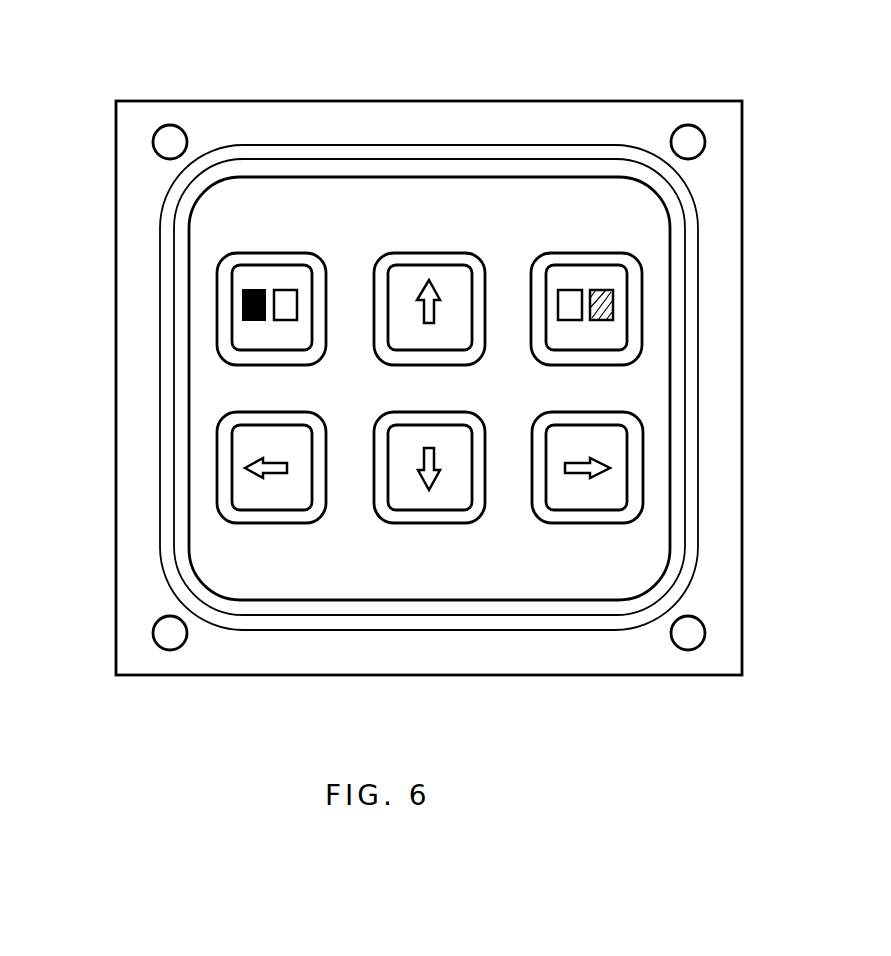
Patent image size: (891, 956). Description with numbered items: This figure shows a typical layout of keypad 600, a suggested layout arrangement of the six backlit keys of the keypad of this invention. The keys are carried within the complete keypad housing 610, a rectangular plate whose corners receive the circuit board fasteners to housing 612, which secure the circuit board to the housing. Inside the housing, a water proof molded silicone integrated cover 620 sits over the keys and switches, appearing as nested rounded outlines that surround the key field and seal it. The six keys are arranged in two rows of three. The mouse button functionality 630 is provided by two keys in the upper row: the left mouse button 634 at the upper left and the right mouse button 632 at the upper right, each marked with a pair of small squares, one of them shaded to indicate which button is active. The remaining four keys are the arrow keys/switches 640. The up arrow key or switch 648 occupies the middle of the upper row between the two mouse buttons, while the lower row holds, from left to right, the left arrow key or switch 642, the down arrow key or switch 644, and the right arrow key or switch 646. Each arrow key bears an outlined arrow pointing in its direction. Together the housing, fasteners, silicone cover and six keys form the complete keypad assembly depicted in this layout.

The typical layout of keypad 600 is at (228, 728).
The keypad housing 610 is at (733, 368).
The circuit board fasteners 612 is at (690, 138).
The water proof molded silicone integrated cover 620 is at (642, 220).
The mouse button functionality 630 is at (436, 561).
The right mouse button 632 is at (613, 335).
The left mouse button 634 is at (250, 263).
The arrow keys/switches 640 is at (429, 459).
The left arrow key or switch 642 is at (233, 495).
The down arrow key or switch 644 is at (413, 498).
The right arrow key or switch 646 is at (613, 498).
The up arrow key or switch 648 is at (418, 272).